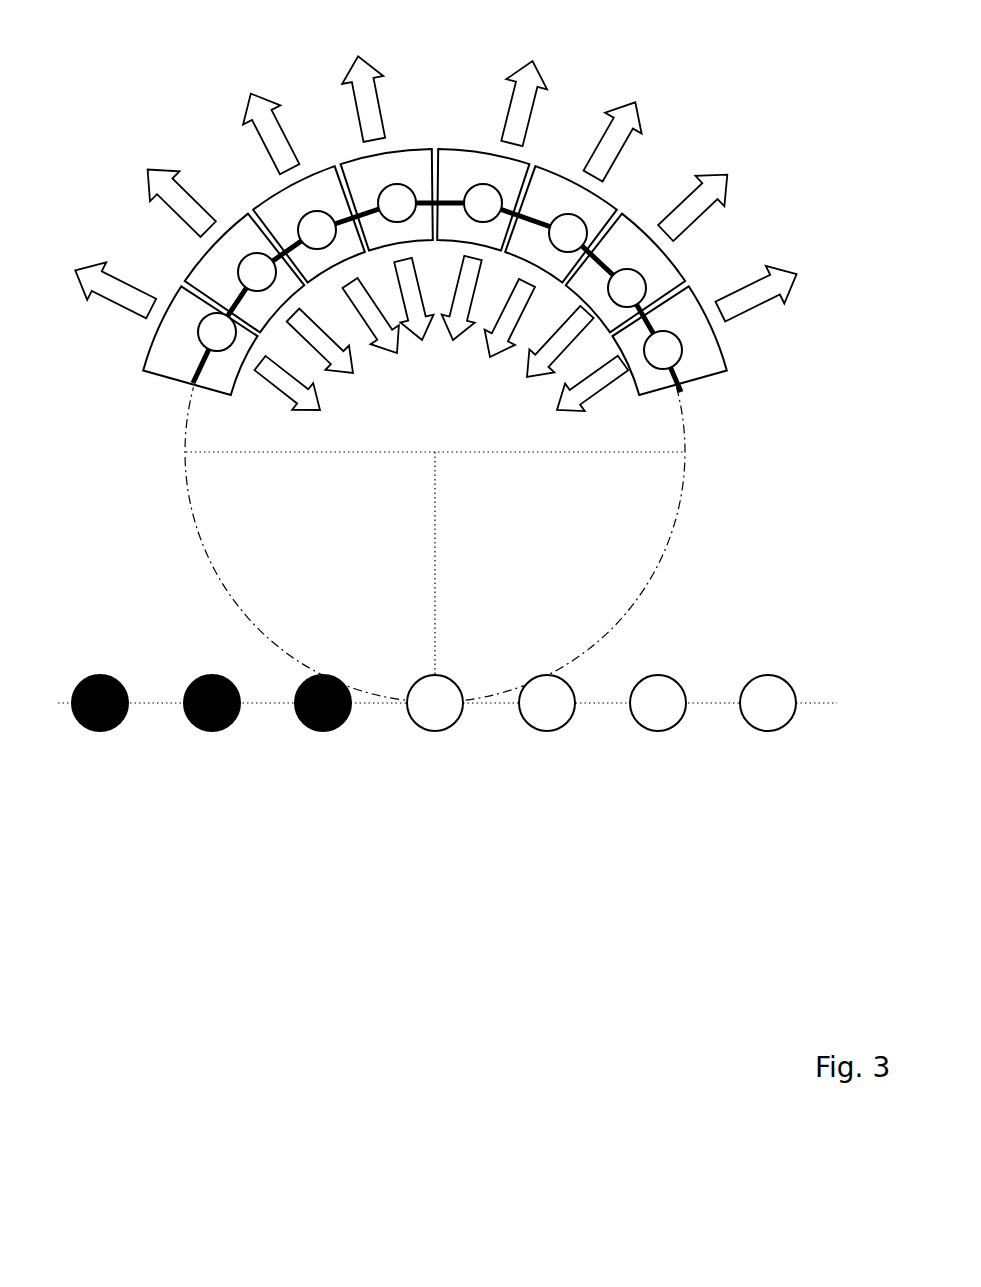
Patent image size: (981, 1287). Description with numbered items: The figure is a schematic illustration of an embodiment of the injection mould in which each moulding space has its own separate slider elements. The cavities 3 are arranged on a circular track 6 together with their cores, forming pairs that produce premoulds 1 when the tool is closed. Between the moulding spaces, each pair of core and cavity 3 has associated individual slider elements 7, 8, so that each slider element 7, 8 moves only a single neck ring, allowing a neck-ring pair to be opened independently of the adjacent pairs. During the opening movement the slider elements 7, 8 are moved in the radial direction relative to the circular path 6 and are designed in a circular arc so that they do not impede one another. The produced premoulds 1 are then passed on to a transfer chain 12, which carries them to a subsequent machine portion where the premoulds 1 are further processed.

The premould 1 is at (337, 733).
The cavity 3 is at (322, 230).
The circular track 6 is at (663, 557).
The slider element 7 is at (185, 342).
The slider element 8 is at (235, 375).
The transfer chain 12 is at (601, 750).